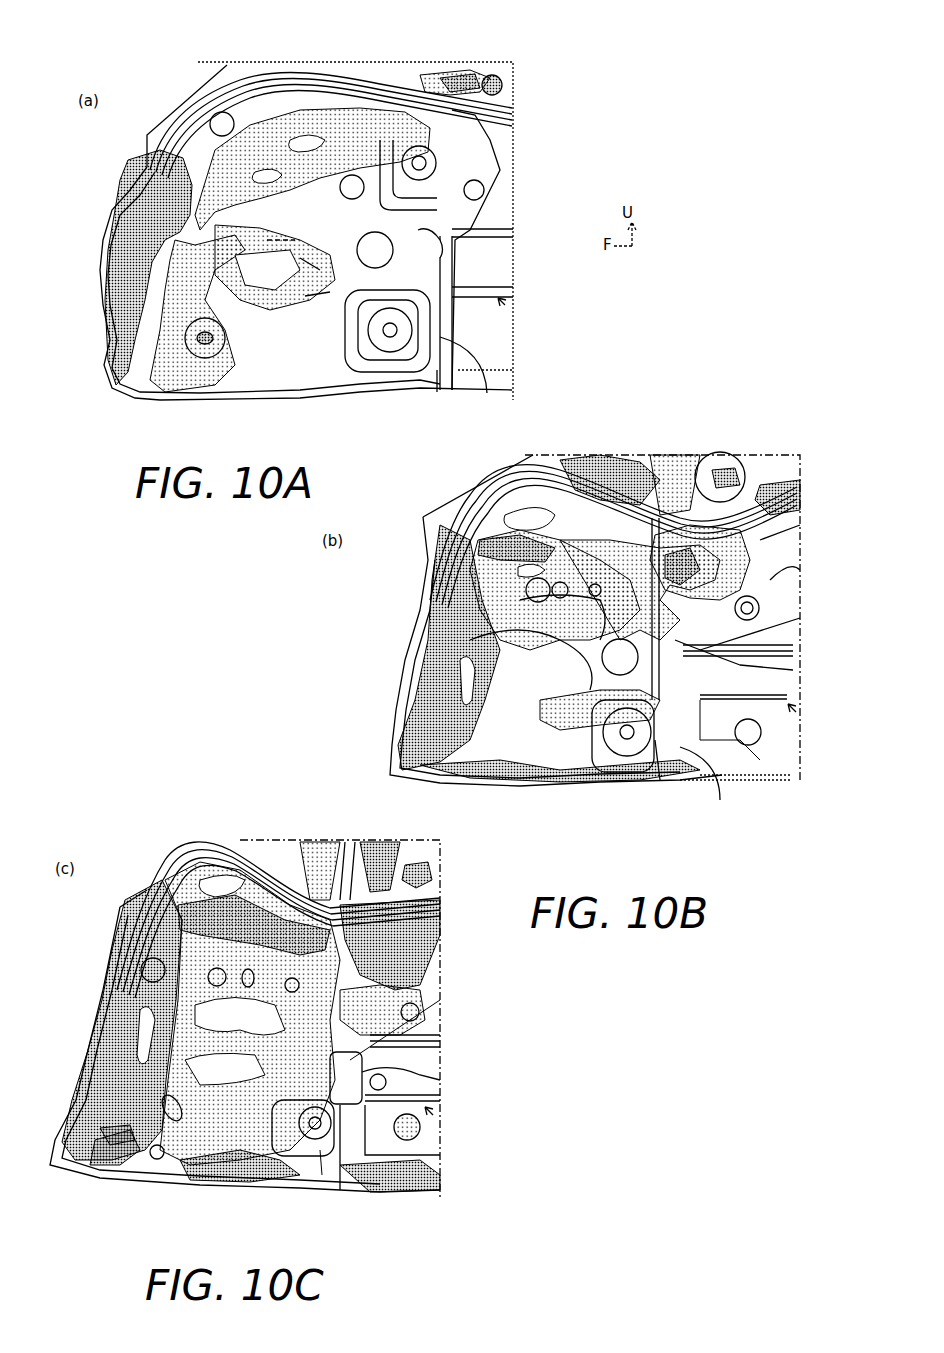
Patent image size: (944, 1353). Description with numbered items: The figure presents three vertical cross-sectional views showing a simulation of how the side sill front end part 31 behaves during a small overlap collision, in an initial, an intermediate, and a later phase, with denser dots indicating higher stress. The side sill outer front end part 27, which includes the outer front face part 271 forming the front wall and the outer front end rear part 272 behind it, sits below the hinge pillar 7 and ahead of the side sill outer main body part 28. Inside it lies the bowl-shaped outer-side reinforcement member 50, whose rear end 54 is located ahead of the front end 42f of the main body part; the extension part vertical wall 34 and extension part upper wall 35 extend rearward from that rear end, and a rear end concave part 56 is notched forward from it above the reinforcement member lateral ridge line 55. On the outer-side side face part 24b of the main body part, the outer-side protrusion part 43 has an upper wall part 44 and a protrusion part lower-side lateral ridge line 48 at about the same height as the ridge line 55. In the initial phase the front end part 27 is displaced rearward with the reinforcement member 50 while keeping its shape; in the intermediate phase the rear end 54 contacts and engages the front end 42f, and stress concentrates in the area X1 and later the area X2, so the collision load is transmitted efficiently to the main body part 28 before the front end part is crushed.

In FIG. 10A, the side sill front end part 31 is at (148, 83).
In FIG. 10B, the side sill front end part 31 is at (434, 483).
In FIG. 10C, the side sill front end part 31 is at (134, 822).
In FIG. 10A, the hinge pillar 7 is at (200, 90).
In FIG. 10A, the side sill outer front end part 27 is at (105, 216).
In FIG. 10B, the side sill outer front end part 27 is at (405, 620).
In FIG. 10C, the side sill outer front end part 27 is at (80, 1014).
In FIG. 10A, the outer front face part 271 is at (102, 304).
In FIG. 10B, the outer front face part 271 is at (424, 690).
In FIG. 10C, the outer front face part 271 is at (96, 1076).
In FIG. 10A, the outer front end rear part 272 is at (366, 86).
In FIG. 10B, the outer front end rear part 272 is at (630, 455).
In FIG. 10C, the outer front end rear part 272 is at (265, 858).
In FIG. 10A, the outer-side reinforcement member 50 is at (322, 88).
In FIG. 10B, the outer-side reinforcement member 50 is at (566, 490).
In FIG. 10C, the outer-side reinforcement member 50 is at (216, 852).
In FIG. 10A, the side sill outer main body part 28 is at (492, 118).
In FIG. 10B, the side sill outer main body part 28 is at (776, 480).
In FIG. 10C, the side sill outer main body part 28 is at (421, 880).
In FIG. 10A, the extension part upper wall 35 is at (496, 110).
In FIG. 10B, the extension part upper wall 35 is at (720, 480).
In FIG. 10C, the extension part upper wall 35 is at (345, 852).
In FIG. 10A, the extension part vertical wall 34 is at (496, 165).
In FIG. 10B, the extension part vertical wall 34 is at (775, 580).
In FIG. 10C, the extension part vertical wall 34 is at (440, 948).
In FIG. 10A, the outer-side side face part 24b is at (492, 188).
In FIG. 10B, the outer-side side face part 24b is at (795, 604).
In FIG. 10C, the outer-side side face part 24b is at (440, 988).
In FIG. 10A, the upper wall part 44 is at (500, 232).
In FIG. 10B, the upper wall part 44 is at (795, 645).
In FIG. 10A, the rear end concave part 56 is at (470, 252).
In FIG. 10B, the rear end concave part 56 is at (795, 670).
In FIG. 10C, the rear end concave part 56 is at (440, 1080).
In FIG. 10A, the outer-side protrusion part 43 is at (507, 306).
In FIG. 10B, the outer-side protrusion part 43 is at (797, 713).
In FIG. 10C, the outer-side protrusion part 43 is at (434, 1116).
In FIG. 10A, the reinforcement member lateral ridge line 55 is at (389, 331).
In FIG. 10B, the reinforcement member lateral ridge line 55 is at (600, 785).
In FIG. 10C, the reinforcement member lateral ridge line 55 is at (270, 1148).
In FIG. 10A, the front end 42f is at (438, 392).
In FIG. 10B, the front end 42f is at (658, 782).
In FIG. 10C, the front end 42f is at (325, 1176).
In FIG. 10A, the rear end 54 is at (490, 393).
In FIG. 10B, the rear end 54 is at (718, 790).
In FIG. 10C, the rear end 54 is at (373, 1185).
In FIG. 10B, the protrusion part lower-side lateral ridge line 48 is at (790, 690).
In FIG. 10C, the protrusion part lower-side lateral ridge line 48 is at (440, 1098).
In FIG. 10B, the area X1 is at (800, 618).
In FIG. 10C, the area X2 is at (440, 1042).